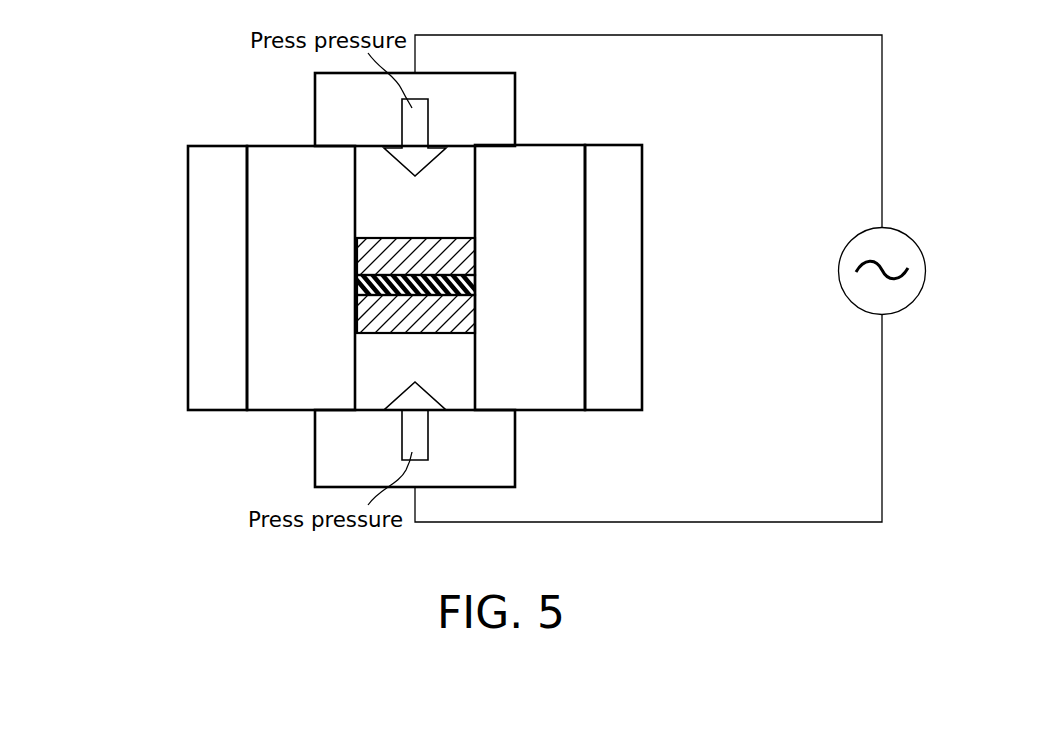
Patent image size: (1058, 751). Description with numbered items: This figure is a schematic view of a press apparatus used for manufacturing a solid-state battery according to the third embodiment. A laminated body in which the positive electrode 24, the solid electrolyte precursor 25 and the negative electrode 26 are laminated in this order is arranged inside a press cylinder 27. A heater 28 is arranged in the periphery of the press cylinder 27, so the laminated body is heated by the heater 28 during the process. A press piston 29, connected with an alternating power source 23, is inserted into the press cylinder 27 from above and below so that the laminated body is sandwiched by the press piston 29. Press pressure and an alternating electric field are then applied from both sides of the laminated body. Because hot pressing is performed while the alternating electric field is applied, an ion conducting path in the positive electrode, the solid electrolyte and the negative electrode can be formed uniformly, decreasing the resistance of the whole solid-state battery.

The alternating power source 23 is at (903, 316).
The positive electrode 24 is at (449, 247).
The solid electrolyte precursor 25 is at (475, 280).
The negative electrode 26 is at (450, 320).
The press cylinder 27 is at (565, 188).
The heater 28 is at (210, 338).
The press piston 29 is at (332, 104).